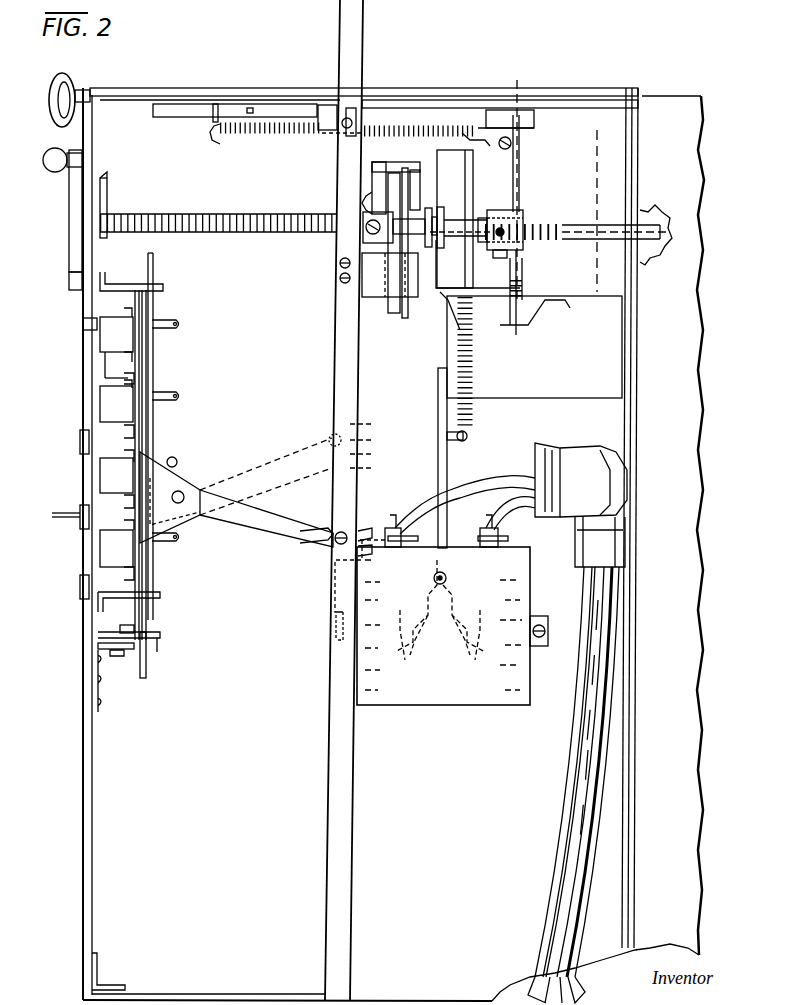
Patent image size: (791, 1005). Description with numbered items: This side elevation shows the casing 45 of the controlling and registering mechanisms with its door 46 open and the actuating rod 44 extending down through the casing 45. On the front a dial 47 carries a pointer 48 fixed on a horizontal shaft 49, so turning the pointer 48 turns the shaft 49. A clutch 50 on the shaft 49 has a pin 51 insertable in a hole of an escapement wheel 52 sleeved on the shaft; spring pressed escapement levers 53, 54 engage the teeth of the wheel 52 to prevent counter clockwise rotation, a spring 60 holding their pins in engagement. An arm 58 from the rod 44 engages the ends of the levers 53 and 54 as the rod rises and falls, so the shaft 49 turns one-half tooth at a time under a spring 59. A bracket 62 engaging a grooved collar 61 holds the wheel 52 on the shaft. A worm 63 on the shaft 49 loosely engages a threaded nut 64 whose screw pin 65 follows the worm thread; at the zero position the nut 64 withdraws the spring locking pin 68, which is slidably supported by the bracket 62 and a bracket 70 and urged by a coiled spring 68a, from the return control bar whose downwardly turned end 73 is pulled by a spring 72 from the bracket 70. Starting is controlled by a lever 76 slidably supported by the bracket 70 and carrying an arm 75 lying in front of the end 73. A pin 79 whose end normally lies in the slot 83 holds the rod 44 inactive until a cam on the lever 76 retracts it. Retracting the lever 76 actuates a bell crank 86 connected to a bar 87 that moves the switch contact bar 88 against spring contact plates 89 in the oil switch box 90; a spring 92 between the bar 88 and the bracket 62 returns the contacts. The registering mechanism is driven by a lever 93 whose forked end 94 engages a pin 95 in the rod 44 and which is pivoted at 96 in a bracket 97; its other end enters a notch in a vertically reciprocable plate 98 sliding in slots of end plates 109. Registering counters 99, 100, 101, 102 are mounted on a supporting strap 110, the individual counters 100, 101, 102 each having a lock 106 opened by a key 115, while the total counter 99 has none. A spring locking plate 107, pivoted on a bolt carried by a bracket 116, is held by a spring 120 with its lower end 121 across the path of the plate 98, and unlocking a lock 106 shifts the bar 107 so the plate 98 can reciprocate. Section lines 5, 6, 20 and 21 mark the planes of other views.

The section line 5 is at (314, 212).
The section line 6 is at (514, 207).
The terminal connections 20 is at (400, 537).
The section line 21 is at (598, 90).
The actuating rod 44 is at (364, 38).
The casing 45 is at (84, 822).
The door 46 is at (701, 500).
The dial 47 is at (84, 322).
The pointer 48 is at (69, 258).
The shaft 49 is at (140, 220).
The clutch 50 is at (362, 238).
The pin 51 is at (384, 175).
The escapement wheel 52 is at (392, 300).
The escapement lever 53 is at (414, 172).
The escapement lever 54 is at (408, 316).
The arm 58 is at (362, 285).
The spring 59 is at (108, 196).
The spring 60 is at (410, 212).
The grooved collar 61 is at (441, 208).
The bracket 62 is at (433, 266).
The worm 63 is at (486, 214).
The threaded nut 64 is at (518, 218).
The screw pin 65 is at (498, 255).
The spring locking pin 68 is at (521, 168).
The coiled spring 68a is at (522, 268).
The bracket 70 is at (536, 128).
The spring 72 is at (255, 136).
The downwardly turned end 73 is at (213, 130).
The arm 75 is at (238, 108).
The starting lever 76 is at (82, 90).
The pin 79 is at (344, 128).
The slot 83 is at (358, 110).
The bell crank 86 is at (520, 146).
The bar 87 is at (473, 176).
The switch contact bar 88 is at (438, 441).
The spring contact plates 89 is at (410, 660).
The oil switch box 90 is at (480, 706).
The spring 92 is at (470, 390).
The lever 93 is at (266, 490).
The forked end 94 is at (362, 530).
The pin 95 is at (338, 544).
The pivot 96 is at (182, 494).
The bracket 97 is at (175, 453).
The vertically reciprocable plate 98 is at (155, 304).
The total counter 99 is at (105, 337).
The registering counter 100 is at (100, 409).
The registering counter 101 is at (100, 484).
The registering counter 102 is at (100, 555).
The lock 106 is at (82, 446).
The spring locking plate 107 is at (141, 653).
The end plates 109 is at (158, 288).
The supporting strap 110 is at (140, 364).
The key 115 is at (50, 511).
The bracket 116 is at (100, 645).
The spring 120 is at (110, 650).
The lower end 121 is at (140, 662).